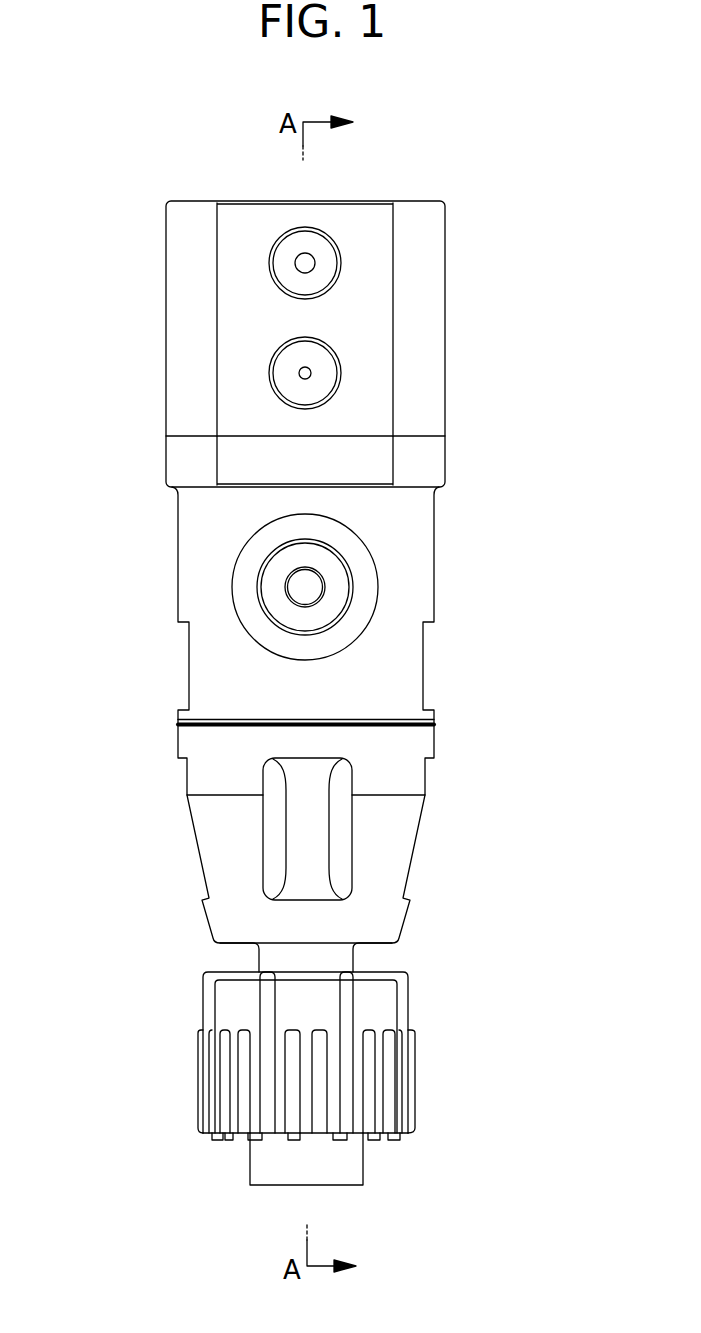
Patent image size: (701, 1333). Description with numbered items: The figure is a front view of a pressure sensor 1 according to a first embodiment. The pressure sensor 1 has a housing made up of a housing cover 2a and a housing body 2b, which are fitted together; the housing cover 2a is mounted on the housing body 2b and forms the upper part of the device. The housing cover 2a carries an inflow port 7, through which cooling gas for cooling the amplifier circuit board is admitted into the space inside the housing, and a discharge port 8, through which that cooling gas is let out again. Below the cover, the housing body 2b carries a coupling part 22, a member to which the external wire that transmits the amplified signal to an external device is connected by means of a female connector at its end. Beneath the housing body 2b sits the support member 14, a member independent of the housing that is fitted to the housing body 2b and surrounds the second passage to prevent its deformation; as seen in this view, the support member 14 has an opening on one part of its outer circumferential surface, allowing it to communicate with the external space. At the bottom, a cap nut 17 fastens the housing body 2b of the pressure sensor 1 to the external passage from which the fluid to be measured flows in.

The pressure sensor 1 is at (490, 170).
The housing cover 2a is at (198, 402).
The housing body 2b is at (198, 456).
The inflow port 7 is at (325, 370).
The discharge port 8 is at (325, 265).
The support member 14 is at (378, 852).
The cap nut 17 is at (388, 1002).
The coupling part 22 is at (337, 587).